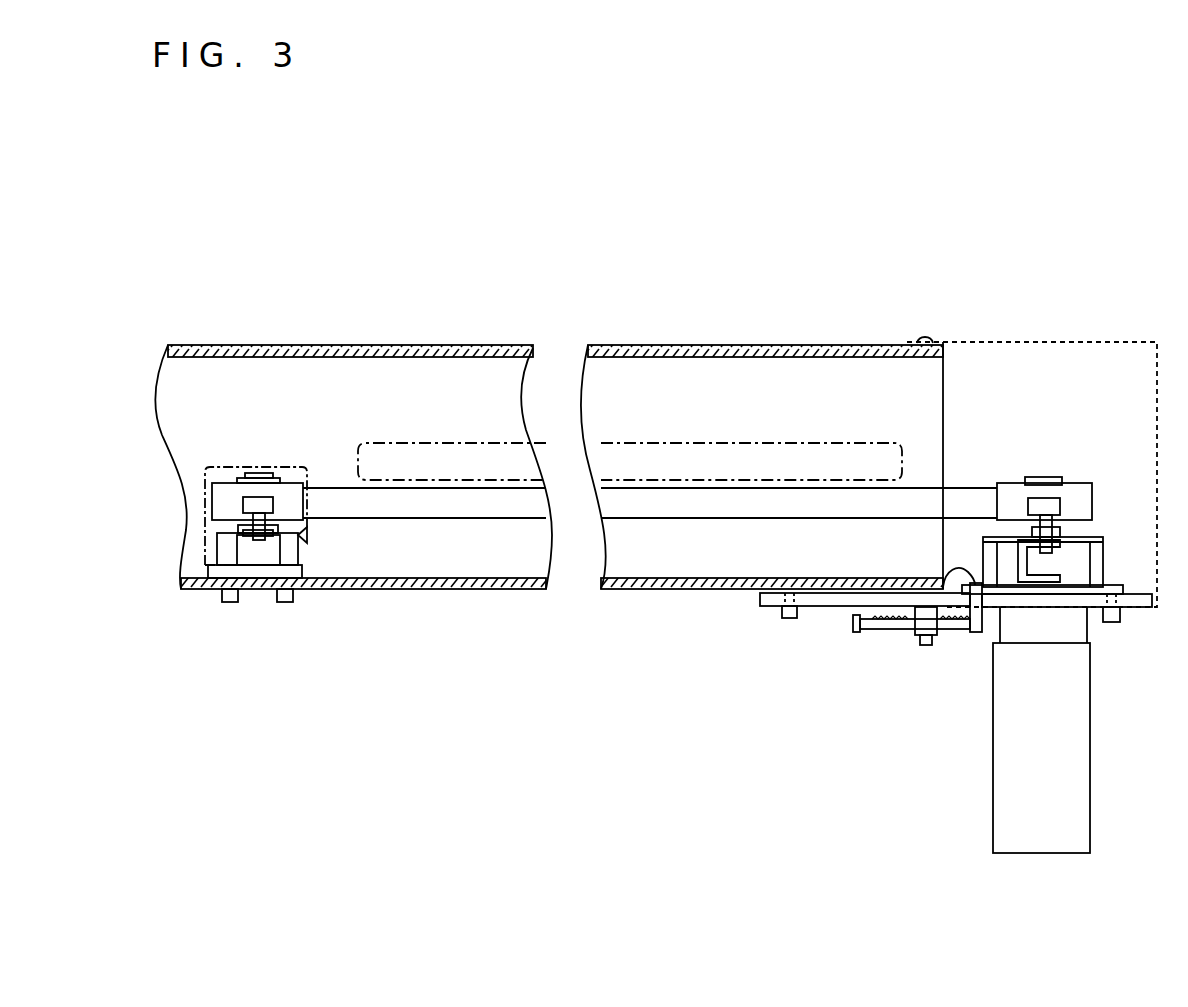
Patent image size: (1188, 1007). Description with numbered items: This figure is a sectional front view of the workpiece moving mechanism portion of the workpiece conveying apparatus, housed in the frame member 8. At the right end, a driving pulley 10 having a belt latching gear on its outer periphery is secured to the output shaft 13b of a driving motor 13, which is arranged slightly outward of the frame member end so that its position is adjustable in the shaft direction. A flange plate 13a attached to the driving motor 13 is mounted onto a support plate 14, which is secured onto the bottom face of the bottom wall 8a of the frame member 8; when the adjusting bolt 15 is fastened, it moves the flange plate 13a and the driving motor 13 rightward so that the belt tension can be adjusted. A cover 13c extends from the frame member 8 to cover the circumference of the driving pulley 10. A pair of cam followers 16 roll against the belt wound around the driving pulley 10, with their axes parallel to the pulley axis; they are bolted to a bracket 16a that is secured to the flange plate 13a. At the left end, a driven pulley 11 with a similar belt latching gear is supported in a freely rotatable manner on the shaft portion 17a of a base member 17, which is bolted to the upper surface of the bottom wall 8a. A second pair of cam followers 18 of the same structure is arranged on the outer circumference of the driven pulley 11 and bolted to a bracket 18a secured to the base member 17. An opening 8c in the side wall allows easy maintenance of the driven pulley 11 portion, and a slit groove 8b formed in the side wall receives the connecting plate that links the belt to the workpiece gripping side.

The frame member 8 is at (495, 345).
The bottom wall 8a is at (686, 590).
The slit groove 8b is at (643, 444).
The opening 8c is at (307, 538).
The driving pulley 10 is at (1078, 487).
The driven pulley 11 is at (226, 470).
The driving motor 13 is at (1095, 740).
The flange plate 13a is at (952, 585).
The output shaft 13b is at (1023, 486).
The cover 13c is at (1007, 342).
The support plate 14 is at (822, 607).
The adjusting bolt 15 is at (891, 632).
The cam follower 16 is at (1045, 498).
The bracket 16a is at (1017, 600).
The base member 17 is at (213, 566).
The shaft portion 17a is at (250, 478).
The cam follower 18 is at (262, 498).
The bracket 18a is at (283, 548).